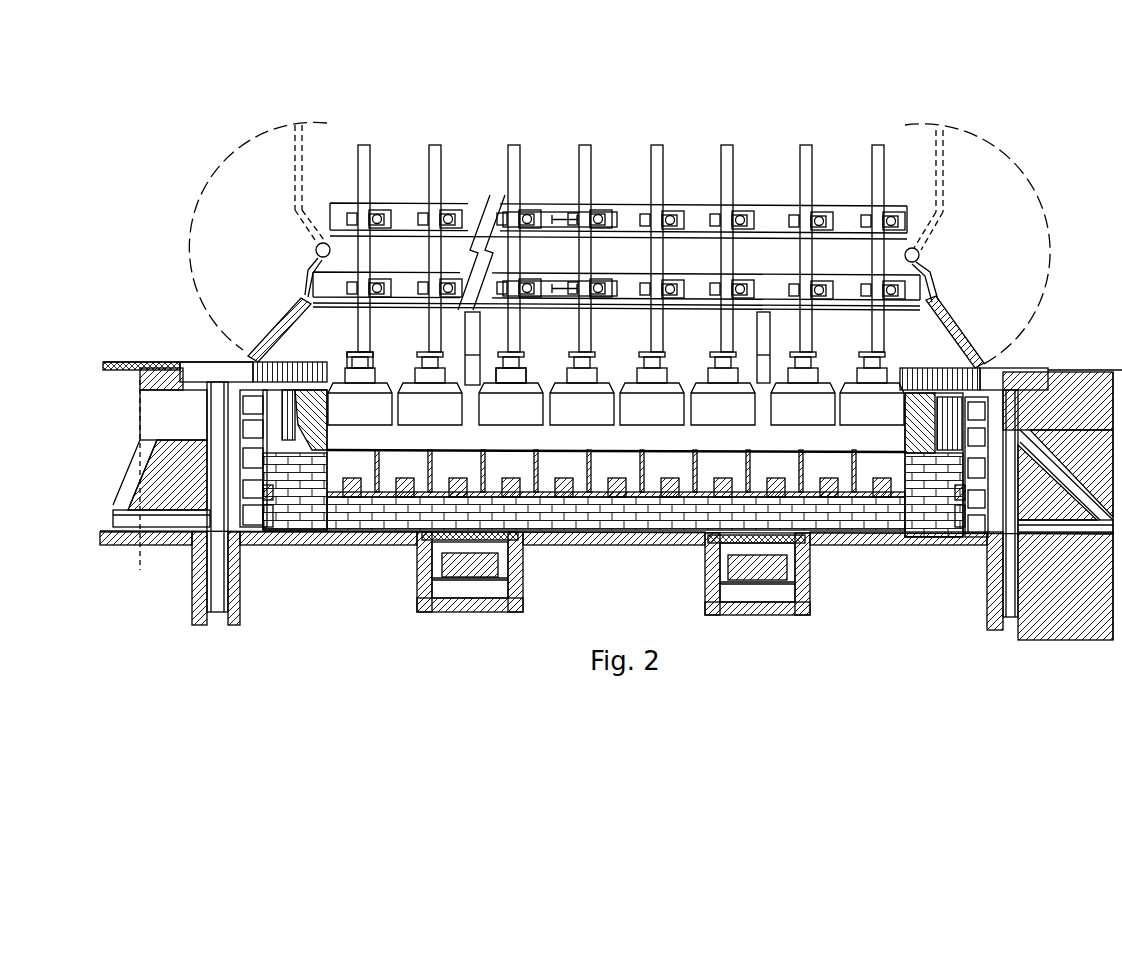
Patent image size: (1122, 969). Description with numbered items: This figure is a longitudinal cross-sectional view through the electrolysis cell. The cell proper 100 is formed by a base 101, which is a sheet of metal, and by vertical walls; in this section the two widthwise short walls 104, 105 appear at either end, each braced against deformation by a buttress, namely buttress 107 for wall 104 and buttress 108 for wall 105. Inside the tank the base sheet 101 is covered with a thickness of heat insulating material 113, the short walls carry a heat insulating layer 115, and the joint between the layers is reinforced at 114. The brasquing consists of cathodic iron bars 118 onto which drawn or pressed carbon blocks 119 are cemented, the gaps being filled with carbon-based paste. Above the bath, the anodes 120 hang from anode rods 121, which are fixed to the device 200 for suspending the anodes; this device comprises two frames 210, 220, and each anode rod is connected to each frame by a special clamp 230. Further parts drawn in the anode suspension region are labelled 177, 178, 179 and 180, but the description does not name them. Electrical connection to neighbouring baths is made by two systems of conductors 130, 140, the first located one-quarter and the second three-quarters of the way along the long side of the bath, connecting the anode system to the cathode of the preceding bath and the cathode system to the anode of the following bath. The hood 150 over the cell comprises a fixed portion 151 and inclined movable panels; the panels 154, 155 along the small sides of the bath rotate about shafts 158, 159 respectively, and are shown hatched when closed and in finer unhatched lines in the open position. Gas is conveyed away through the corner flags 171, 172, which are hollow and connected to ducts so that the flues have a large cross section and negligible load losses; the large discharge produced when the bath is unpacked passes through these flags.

The cell proper 100 is at (904, 608).
The base 101 is at (850, 523).
The short vertical wall 104 is at (263, 492).
The short vertical wall 105 is at (971, 492).
The buttress 107 is at (236, 442).
The buttress 108 is at (992, 463).
The heat insulating material 113 is at (542, 502).
The reinforced joint 114 is at (303, 482).
The heat insulating layer 115 is at (281, 368).
The cathodic iron bars 118 is at (770, 470).
The carbon blocks 119 is at (710, 470).
The anodes 120 is at (656, 404).
The anode rods 121 is at (658, 192).
The system of conductors 130 is at (433, 572).
The system of conductors 140 is at (787, 570).
The hood 150 is at (1018, 247).
The fixed portion of hood 151 is at (828, 304).
The movable hood portion 154 is at (944, 180).
The movable hood portion 155 is at (296, 174).
The shaft 158 is at (921, 252).
The shaft 159 is at (316, 248).
The corner flag 171 is at (1020, 368).
The corner flag 172 is at (206, 362).
The crucible holder 177 is at (390, 370).
The right guide bar 178 is at (763, 372).
The left guide bar 179 is at (476, 370).
The crucible collar 180 is at (473, 398).
The device for suspending the anodes 200 is at (616, 256).
The frame 210 is at (412, 282).
The frame 220 is at (420, 193).
The special clamp 230 is at (366, 215).